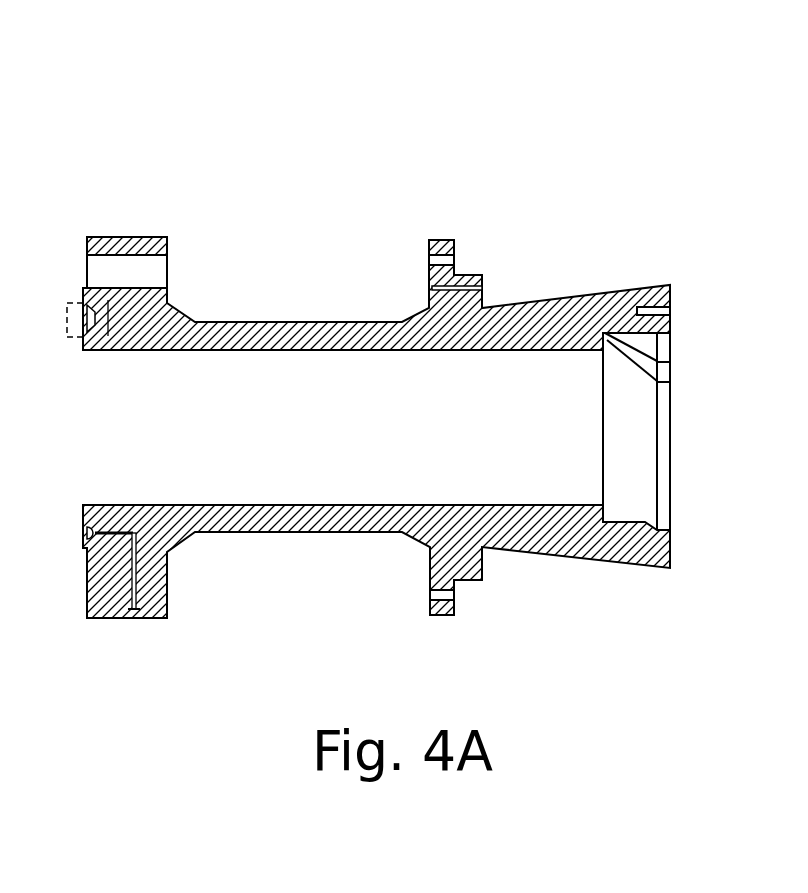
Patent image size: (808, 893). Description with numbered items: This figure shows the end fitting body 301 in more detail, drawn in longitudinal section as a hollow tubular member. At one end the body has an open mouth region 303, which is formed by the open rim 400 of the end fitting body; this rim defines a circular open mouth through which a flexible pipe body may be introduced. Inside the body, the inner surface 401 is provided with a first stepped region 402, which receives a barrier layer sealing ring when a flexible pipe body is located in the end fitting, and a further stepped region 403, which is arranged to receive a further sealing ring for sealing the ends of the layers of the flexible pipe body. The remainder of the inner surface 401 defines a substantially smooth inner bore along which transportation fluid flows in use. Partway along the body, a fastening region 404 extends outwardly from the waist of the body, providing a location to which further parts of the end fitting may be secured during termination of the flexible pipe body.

The end fitting body 301 is at (434, 328).
The open mouth region 303 is at (677, 431).
The open rim 400 is at (673, 550).
The inner surface 401 is at (453, 501).
The first stepped region 402 is at (672, 523).
The further stepped region 403 is at (610, 348).
The fastening region 404 is at (463, 170).